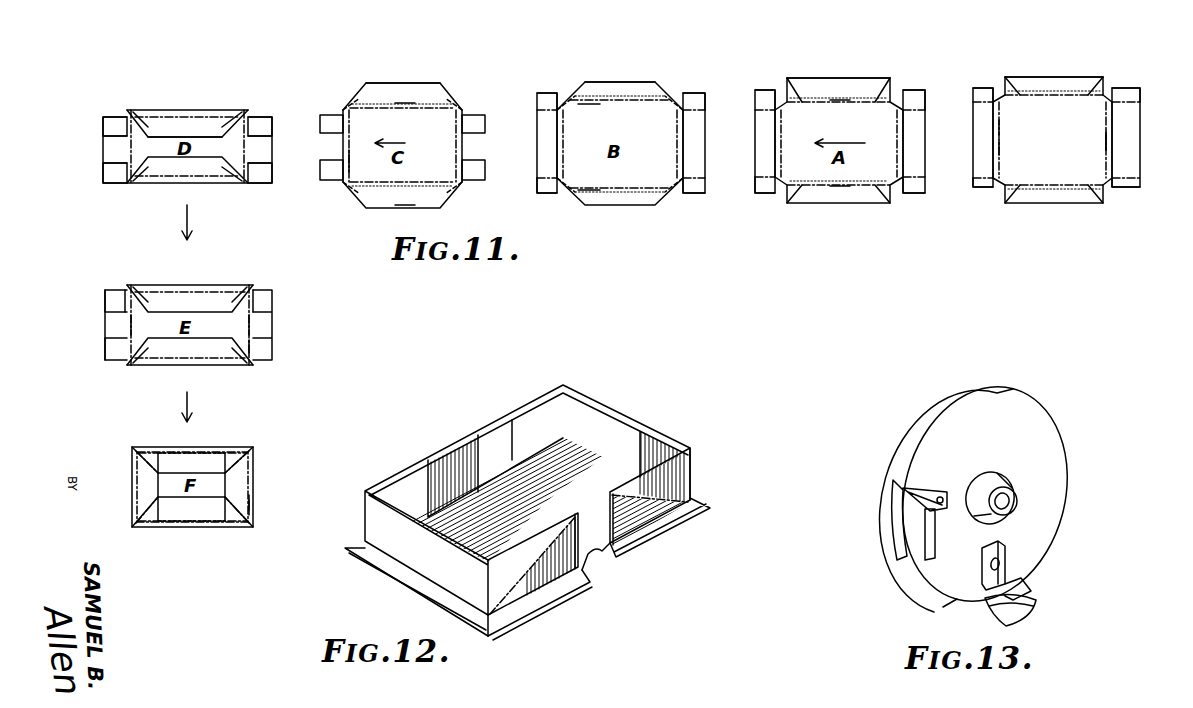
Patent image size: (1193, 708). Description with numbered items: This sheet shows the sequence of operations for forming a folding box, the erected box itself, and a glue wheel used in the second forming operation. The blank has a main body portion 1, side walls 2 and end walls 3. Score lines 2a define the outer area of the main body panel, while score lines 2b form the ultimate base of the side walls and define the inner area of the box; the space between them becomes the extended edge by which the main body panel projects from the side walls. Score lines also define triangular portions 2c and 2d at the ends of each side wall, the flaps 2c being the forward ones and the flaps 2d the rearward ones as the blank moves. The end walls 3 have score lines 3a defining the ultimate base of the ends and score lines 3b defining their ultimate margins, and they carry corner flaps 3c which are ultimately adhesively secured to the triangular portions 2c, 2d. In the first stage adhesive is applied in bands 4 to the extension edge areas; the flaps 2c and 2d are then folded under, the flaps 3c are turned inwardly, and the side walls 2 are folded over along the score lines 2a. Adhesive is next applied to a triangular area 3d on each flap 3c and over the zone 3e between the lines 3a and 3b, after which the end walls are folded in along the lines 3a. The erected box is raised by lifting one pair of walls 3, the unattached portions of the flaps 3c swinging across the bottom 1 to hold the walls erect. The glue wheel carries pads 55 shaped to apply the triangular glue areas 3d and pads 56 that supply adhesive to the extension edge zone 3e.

In FIG. 11, the main body portion 1 is at (619, 314).
In FIG. 12, the main body portion 1 is at (604, 552).
In FIG. 11, the side walls 2 is at (1058, 204).
In FIG. 12, the side walls 2 is at (465, 442).
In FIG. 11, the score lines 2a is at (200, 448).
In FIG. 12, the score lines 2a is at (700, 520).
In FIG. 11, the score lines 2b is at (215, 450).
In FIG. 12, the score lines 2b is at (702, 547).
In FIG. 11, the triangular portions 2c is at (150, 360).
In FIG. 12, the triangular portions 2c is at (536, 606).
In FIG. 11, the triangular portions 2d is at (238, 360).
In FIG. 12, the triangular portions 2d is at (690, 480).
In FIG. 11, the end walls 3 is at (240, 470).
In FIG. 12, the end walls 3 is at (635, 432).
In FIG. 11, the score lines 3a is at (250, 485).
In FIG. 12, the score lines 3a is at (396, 576).
In FIG. 11, the score lines 3b is at (250, 495).
In FIG. 12, the score lines 3b is at (700, 500).
In FIG. 11, the corner flaps 3c is at (107, 335).
In FIG. 12, the corner flaps 3c is at (545, 520).
In FIG. 11, the triangular area 3d is at (107, 352).
In FIG. 11, the zone 3e is at (127, 360).
In FIG. 11, the bands 4 is at (820, 184).
In FIG. 13, the pads 55 is at (1000, 610).
In FIG. 13, the pads 56 is at (1045, 432).